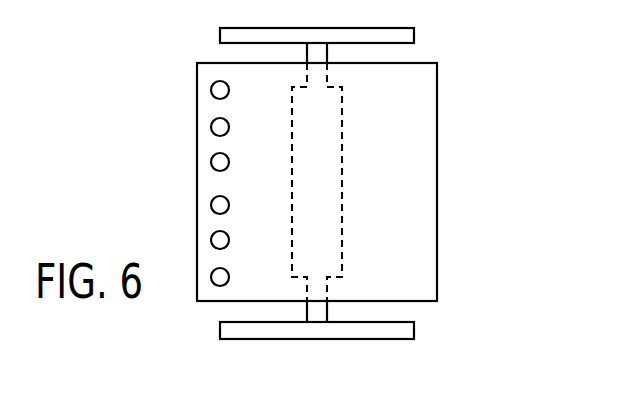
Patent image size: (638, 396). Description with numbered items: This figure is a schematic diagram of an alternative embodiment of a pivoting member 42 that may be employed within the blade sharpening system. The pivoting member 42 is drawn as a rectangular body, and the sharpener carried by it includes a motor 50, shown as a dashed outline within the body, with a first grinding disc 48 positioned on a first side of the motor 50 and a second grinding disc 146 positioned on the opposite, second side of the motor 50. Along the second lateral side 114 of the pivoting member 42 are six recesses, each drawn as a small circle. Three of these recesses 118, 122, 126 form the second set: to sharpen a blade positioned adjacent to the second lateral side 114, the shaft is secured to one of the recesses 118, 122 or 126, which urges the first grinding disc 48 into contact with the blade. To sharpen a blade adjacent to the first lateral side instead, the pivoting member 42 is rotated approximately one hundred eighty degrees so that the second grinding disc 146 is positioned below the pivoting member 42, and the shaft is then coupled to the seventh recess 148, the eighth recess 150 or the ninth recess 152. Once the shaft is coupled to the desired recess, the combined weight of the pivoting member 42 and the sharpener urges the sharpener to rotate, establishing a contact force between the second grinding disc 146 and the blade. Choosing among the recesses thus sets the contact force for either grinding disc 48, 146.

The pivoting member 42 is at (437, 180).
The first grinding disc 48 is at (220, 326).
The motor 50 is at (342, 182).
The second lateral side 114 is at (177, 140).
The recess 118 is at (226, 96).
The recess 122 is at (226, 134).
The recess 126 is at (226, 168).
The second grinding disc 146 is at (220, 31).
The seventh recess 148 is at (226, 284).
The eighth recess 150 is at (226, 246).
The ninth recess 152 is at (226, 212).